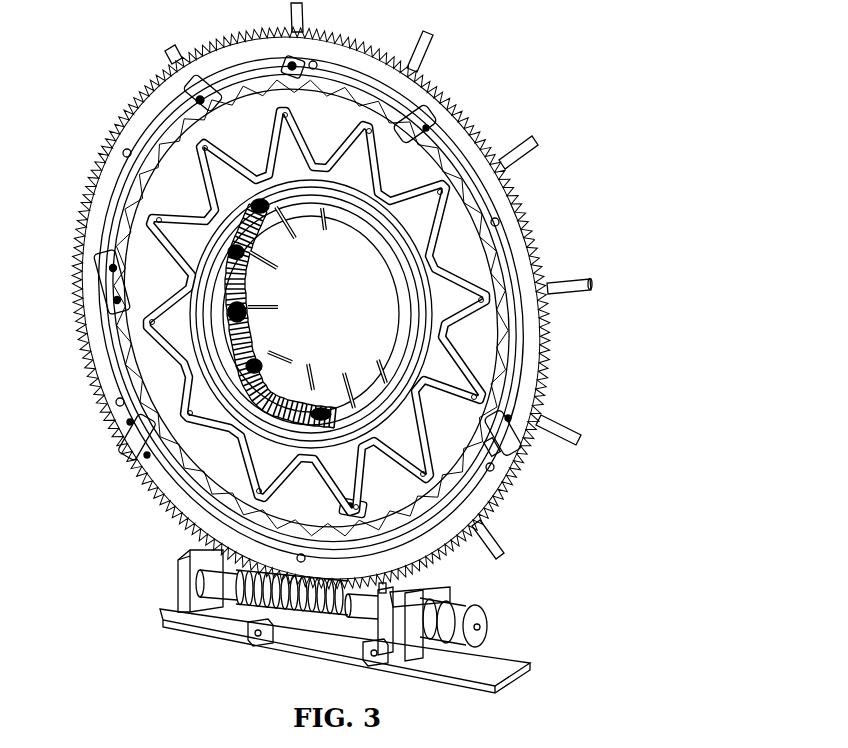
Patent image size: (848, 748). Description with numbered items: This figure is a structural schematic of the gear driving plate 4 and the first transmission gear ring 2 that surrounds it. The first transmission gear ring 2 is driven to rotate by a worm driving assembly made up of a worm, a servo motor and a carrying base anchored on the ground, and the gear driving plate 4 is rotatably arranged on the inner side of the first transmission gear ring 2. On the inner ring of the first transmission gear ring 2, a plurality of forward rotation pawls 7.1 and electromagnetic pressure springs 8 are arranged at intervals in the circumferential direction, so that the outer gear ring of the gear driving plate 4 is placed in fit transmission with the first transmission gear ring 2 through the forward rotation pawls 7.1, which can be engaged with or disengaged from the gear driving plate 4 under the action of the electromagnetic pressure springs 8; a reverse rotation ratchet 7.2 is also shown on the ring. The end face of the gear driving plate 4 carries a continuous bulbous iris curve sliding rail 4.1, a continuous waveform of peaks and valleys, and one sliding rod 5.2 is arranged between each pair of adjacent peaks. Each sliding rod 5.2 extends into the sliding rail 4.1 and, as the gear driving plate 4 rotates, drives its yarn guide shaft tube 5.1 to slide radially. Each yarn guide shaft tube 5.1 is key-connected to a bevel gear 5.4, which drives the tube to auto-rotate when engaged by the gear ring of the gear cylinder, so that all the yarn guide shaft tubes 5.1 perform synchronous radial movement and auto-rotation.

The first transmission gear ring 2 is at (473, 133).
The gear driving plate 4 is at (173, 170).
The continuous bulbous iris curve sliding rail 4.1 is at (165, 255).
The yarn guide shaft tube 5.1 is at (563, 280).
The sliding rod 5.2 is at (283, 115).
The bevel gear 5.4 is at (232, 307).
The forward rotation pawl 7.1 is at (423, 120).
The reverse rotation ratchet 7.2 is at (508, 432).
The electromagnetic pressure spring 8 is at (492, 447).